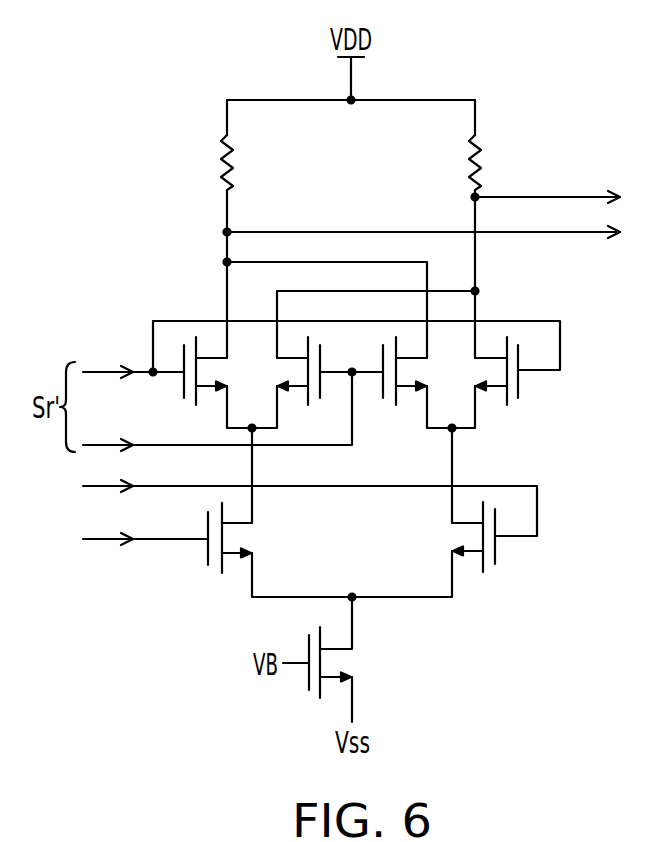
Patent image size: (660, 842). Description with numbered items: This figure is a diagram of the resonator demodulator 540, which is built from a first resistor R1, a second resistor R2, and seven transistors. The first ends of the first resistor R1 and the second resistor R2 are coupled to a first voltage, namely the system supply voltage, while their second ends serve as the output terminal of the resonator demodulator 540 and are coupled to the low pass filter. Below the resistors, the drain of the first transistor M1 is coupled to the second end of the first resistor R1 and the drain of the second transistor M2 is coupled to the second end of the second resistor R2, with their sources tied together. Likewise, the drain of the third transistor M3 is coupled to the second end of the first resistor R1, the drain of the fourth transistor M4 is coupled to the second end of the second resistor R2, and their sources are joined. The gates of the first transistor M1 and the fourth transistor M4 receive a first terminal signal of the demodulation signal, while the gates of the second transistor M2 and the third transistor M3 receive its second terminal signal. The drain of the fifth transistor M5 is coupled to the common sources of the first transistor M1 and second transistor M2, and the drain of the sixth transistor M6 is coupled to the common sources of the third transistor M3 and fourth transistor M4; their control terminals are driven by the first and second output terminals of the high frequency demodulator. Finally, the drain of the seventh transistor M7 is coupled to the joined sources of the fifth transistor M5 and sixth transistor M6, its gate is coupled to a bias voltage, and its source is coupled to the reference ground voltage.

The first resistor R1 is at (236, 156).
The second resistor R2 is at (468, 163).
The first transistor M1 is at (190, 401).
The second transistor M2 is at (292, 369).
The third transistor M3 is at (392, 405).
The fourth transistor M4 is at (490, 370).
The fifth transistor M5 is at (246, 537).
The sixth transistor M6 is at (460, 535).
The seventh transistor M7 is at (344, 660).
The resonator demodulator 540 is at (562, 671).